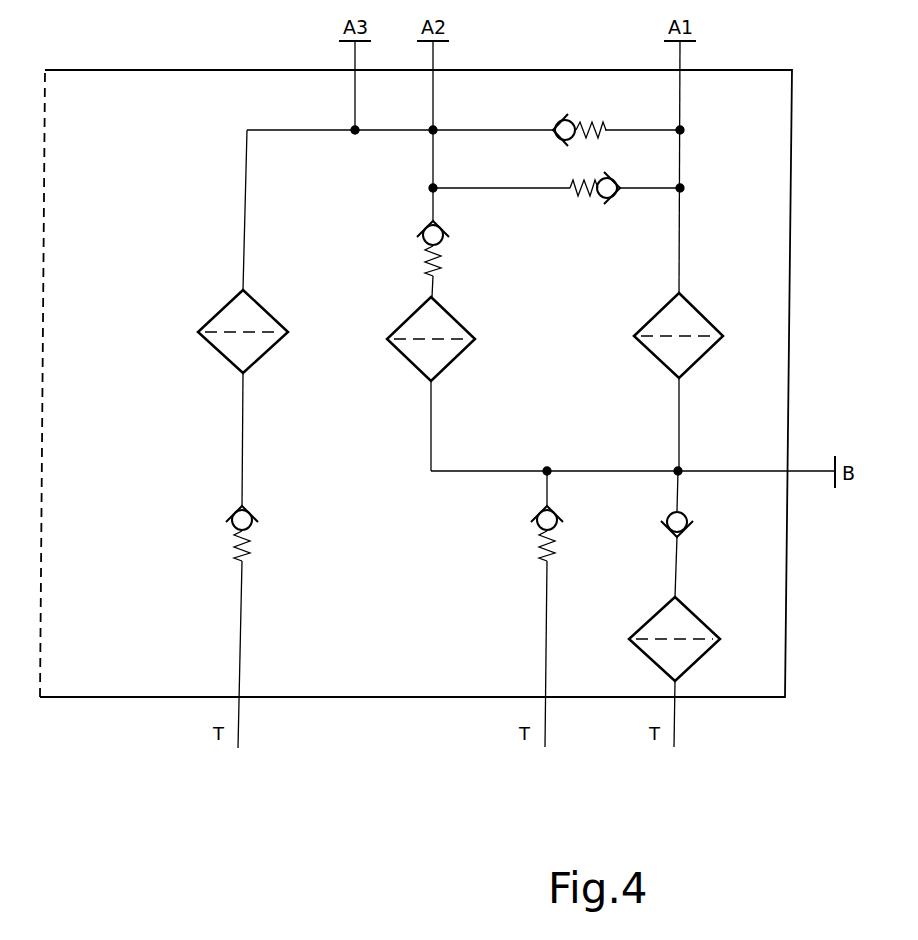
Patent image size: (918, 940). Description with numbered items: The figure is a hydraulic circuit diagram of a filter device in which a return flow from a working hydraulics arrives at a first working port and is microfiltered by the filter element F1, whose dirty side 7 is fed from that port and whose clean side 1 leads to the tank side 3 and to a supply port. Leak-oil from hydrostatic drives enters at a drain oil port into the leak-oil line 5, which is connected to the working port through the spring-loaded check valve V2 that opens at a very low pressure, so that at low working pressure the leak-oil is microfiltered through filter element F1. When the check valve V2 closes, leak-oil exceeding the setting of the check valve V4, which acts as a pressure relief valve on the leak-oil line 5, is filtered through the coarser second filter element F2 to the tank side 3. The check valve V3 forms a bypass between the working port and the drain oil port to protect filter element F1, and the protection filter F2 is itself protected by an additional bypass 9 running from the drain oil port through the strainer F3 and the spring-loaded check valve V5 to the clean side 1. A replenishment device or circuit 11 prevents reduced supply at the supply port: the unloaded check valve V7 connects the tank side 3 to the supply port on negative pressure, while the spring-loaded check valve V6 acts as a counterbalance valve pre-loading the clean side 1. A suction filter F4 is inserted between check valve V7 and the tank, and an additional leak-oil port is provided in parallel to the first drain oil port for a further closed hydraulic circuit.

The clean side 1 is at (583, 471).
The tank side 3 is at (676, 684).
The leak-oil line 5 is at (433, 172).
The dirty side 7 is at (680, 290).
The additional bypass 9 is at (247, 215).
The replenishment device or circuit 11 is at (624, 714).
The check valve V2 is at (560, 120).
The check valve V3 is at (618, 200).
The check valve V4 is at (428, 228).
The check valve V5 is at (235, 517).
The check valve V6 is at (535, 520).
The check valve V7 is at (668, 524).
The filter element F1 is at (695, 357).
The second filter element F2 is at (455, 358).
The strainer F3 is at (268, 350).
The suction filter F4 is at (692, 615).